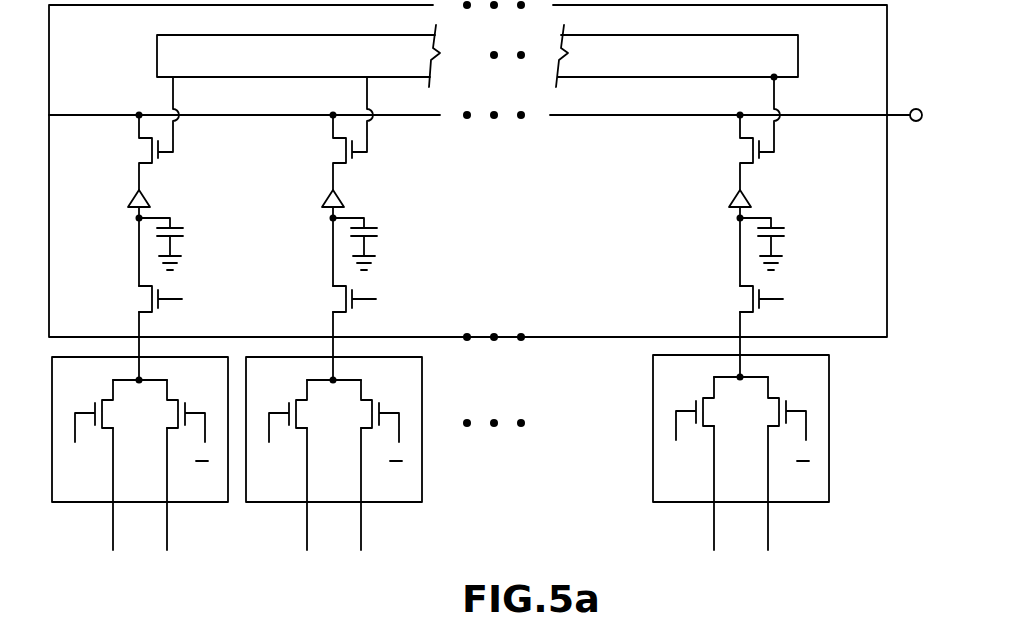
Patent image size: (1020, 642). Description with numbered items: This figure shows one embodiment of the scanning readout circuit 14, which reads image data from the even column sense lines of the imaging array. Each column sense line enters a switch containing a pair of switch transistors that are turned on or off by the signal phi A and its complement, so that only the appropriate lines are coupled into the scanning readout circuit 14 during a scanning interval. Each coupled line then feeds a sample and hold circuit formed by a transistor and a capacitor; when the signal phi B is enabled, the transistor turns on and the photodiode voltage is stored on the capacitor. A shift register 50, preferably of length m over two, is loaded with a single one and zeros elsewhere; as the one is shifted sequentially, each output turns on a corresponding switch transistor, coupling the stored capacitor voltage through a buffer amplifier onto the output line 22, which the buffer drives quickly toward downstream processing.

The scanning readout circuit 14 is at (887, 207).
The output line 22 is at (491, 100).
The shift register 50 is at (798, 55).